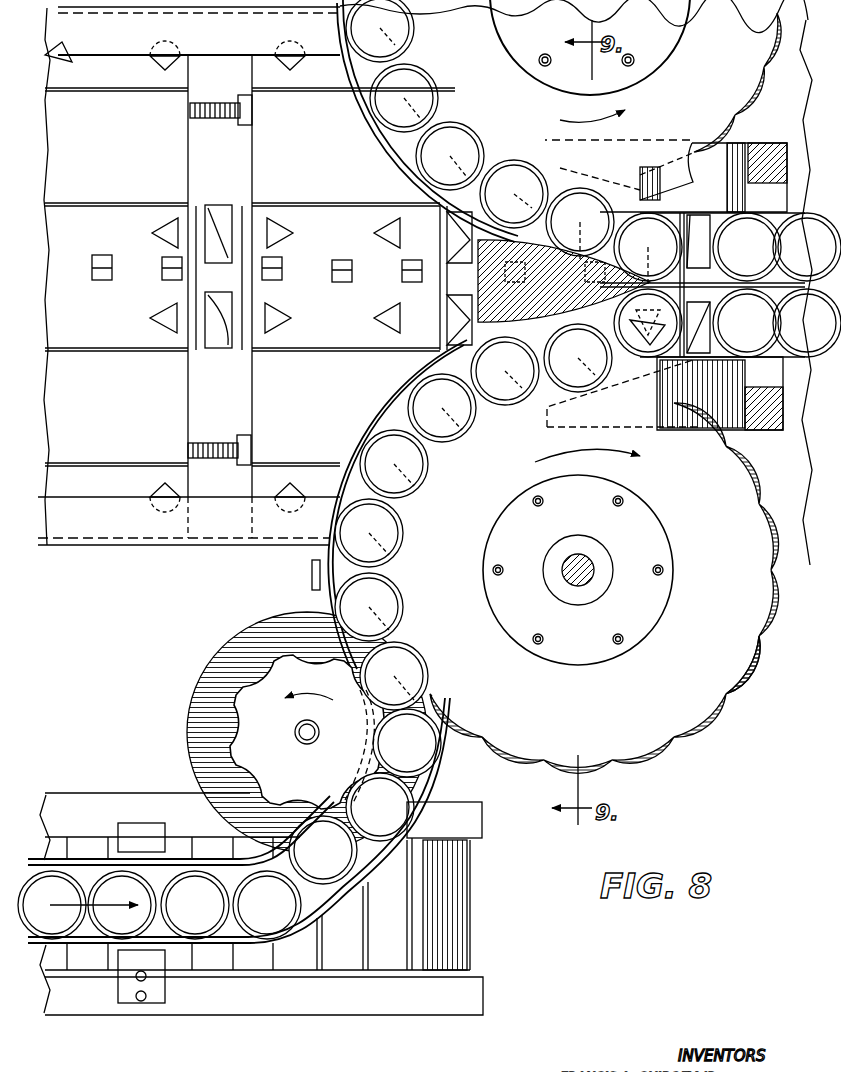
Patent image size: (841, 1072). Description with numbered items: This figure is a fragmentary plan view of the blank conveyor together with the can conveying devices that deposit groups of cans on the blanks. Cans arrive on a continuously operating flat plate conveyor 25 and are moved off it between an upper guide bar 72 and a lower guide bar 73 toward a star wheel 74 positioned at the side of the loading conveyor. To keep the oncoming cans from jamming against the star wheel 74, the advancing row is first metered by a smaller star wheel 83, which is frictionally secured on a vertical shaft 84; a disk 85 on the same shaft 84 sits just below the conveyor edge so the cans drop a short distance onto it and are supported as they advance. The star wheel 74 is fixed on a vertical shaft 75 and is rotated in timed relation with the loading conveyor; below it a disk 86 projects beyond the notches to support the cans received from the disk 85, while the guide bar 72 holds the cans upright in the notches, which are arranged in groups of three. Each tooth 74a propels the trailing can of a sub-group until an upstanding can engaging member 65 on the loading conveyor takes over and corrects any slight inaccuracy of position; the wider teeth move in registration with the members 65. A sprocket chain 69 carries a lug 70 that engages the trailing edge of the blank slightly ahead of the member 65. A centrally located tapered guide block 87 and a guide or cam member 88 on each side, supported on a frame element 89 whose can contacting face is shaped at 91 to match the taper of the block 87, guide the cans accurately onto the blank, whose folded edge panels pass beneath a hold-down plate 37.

The flat plate conveyor 25 is at (255, 980).
The hold-down plate 37 is at (124, 35).
The can engaging and supporting member 65 is at (222, 235).
The sprocket chain 69 is at (218, 120).
The lug 70 is at (253, 112).
The upper guide bar 72 is at (212, 858).
The lower guide bar 73 is at (445, 768).
The star wheel 74 is at (675, 693).
The star wheel tooth 74a is at (478, 400).
The vertical shaft 75 is at (578, 588).
The smaller star wheel 83 is at (265, 685).
The vertical shaft 84 is at (295, 732).
The disk 85 is at (255, 640).
The disk 86 is at (750, 670).
The guide block 87 is at (563, 303).
The guide or cam member 88 is at (720, 192).
The frame element 89 is at (760, 143).
The shaped can contacting face 91 is at (630, 387).